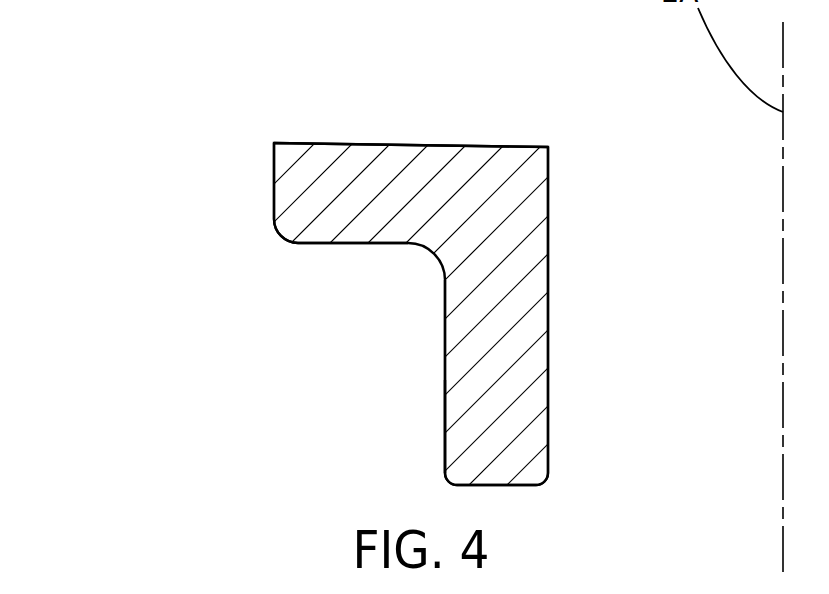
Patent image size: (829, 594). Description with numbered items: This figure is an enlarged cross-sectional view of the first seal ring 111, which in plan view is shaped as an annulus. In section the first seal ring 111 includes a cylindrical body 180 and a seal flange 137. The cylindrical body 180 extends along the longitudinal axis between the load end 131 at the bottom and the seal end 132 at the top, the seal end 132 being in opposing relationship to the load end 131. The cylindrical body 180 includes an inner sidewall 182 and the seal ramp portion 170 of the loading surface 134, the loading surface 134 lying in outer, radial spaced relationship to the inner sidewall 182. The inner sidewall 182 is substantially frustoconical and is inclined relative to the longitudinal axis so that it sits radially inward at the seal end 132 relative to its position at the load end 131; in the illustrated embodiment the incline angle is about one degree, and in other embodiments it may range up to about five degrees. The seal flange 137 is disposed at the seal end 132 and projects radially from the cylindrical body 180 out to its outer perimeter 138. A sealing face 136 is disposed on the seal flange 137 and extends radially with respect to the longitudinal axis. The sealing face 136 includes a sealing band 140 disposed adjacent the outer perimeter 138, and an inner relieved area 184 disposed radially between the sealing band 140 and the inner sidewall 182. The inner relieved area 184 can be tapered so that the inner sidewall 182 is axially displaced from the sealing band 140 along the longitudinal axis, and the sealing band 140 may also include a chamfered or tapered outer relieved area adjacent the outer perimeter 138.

The first seal ring 111 is at (222, 113).
The sealing band 140 is at (337, 145).
The sealing face 136 is at (388, 145).
The inner relieved area 184 is at (492, 145).
The outer perimeter 138 is at (273, 202).
The seal flange 137 is at (332, 197).
The seal end 132 is at (507, 150).
The inner sidewall 182 is at (547, 310).
The loading surface 134 is at (428, 352).
The cylindrical body 180 is at (488, 362).
The seal ramp portion 170 is at (443, 417).
The load end 131 is at (507, 487).